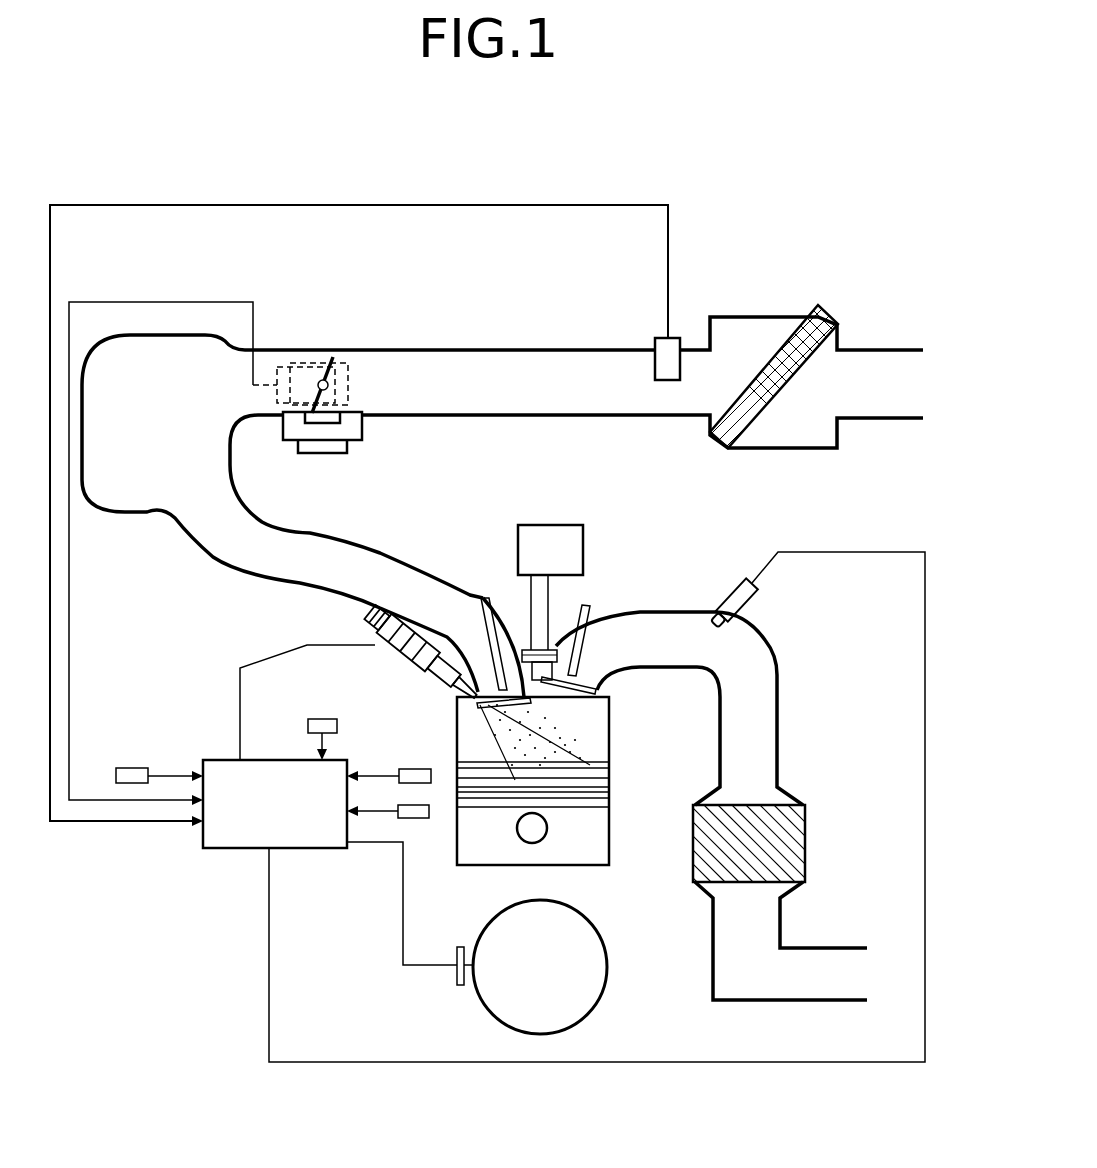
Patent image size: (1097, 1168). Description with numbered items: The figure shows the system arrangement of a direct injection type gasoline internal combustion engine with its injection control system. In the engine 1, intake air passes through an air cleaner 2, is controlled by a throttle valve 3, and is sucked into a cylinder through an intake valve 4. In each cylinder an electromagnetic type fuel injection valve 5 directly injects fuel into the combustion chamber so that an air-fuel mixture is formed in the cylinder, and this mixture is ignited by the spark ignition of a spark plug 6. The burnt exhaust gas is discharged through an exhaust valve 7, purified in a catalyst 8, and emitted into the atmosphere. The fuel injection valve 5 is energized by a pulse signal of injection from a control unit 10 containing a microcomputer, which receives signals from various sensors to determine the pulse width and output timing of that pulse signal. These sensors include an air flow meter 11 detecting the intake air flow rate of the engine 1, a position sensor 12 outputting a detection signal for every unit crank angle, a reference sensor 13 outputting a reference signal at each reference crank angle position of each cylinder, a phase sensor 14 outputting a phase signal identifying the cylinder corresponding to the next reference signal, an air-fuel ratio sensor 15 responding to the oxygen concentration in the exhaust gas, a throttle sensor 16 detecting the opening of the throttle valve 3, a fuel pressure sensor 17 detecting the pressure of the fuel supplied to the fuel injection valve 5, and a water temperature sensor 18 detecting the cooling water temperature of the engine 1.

The engine 1 is at (628, 516).
The air cleaner 2 is at (722, 445).
The throttle valve 3 is at (335, 372).
The intake valve 4 is at (483, 625).
The fuel injection valve 5 is at (410, 660).
The spark plug 6 is at (532, 605).
The exhaust valve 7 is at (590, 612).
The catalyst 8 is at (808, 876).
The control unit 10 is at (318, 852).
The air flow meter 11 is at (656, 342).
The position sensor 12 is at (459, 988).
The reference sensor 13 is at (421, 768).
The phase sensor 14 is at (418, 820).
The air-fuel ratio sensor 15 is at (745, 612).
The throttle sensor 16 is at (311, 356).
The fuel pressure sensor 17 is at (133, 766).
The water temperature sensor 18 is at (322, 716).